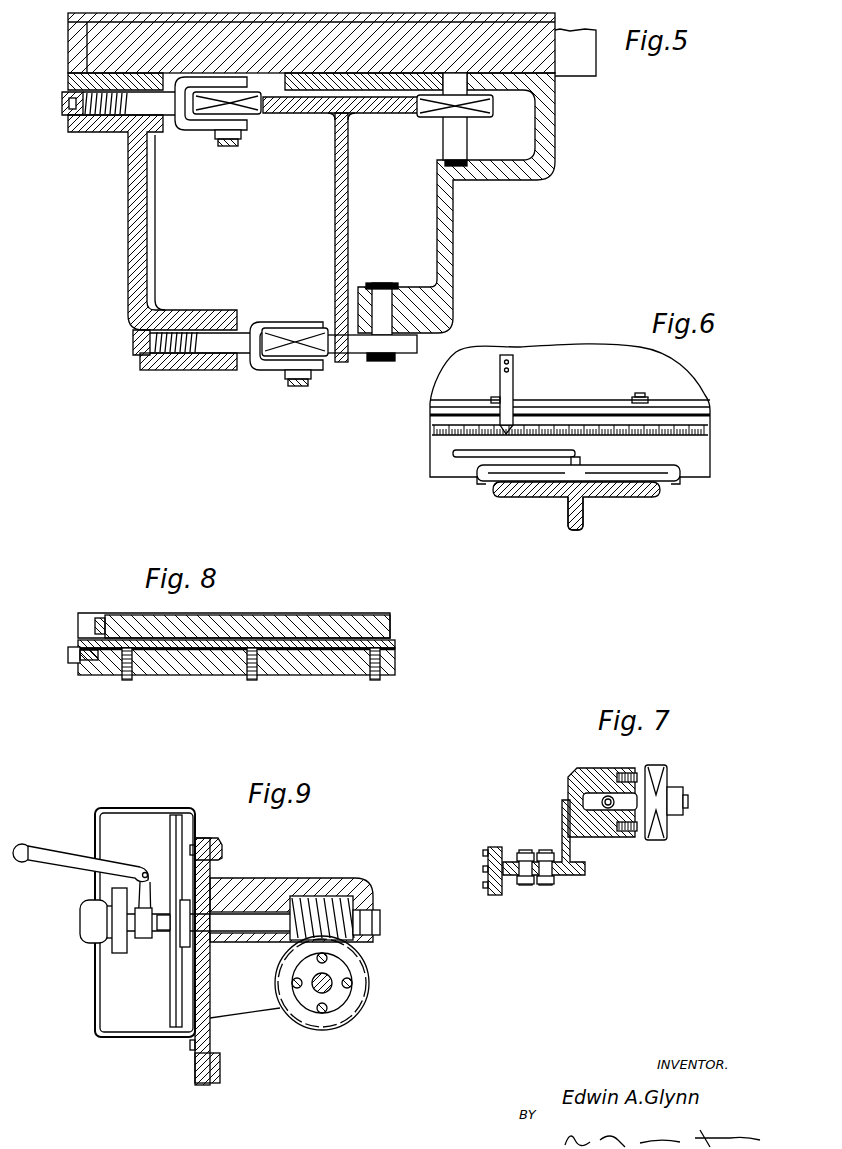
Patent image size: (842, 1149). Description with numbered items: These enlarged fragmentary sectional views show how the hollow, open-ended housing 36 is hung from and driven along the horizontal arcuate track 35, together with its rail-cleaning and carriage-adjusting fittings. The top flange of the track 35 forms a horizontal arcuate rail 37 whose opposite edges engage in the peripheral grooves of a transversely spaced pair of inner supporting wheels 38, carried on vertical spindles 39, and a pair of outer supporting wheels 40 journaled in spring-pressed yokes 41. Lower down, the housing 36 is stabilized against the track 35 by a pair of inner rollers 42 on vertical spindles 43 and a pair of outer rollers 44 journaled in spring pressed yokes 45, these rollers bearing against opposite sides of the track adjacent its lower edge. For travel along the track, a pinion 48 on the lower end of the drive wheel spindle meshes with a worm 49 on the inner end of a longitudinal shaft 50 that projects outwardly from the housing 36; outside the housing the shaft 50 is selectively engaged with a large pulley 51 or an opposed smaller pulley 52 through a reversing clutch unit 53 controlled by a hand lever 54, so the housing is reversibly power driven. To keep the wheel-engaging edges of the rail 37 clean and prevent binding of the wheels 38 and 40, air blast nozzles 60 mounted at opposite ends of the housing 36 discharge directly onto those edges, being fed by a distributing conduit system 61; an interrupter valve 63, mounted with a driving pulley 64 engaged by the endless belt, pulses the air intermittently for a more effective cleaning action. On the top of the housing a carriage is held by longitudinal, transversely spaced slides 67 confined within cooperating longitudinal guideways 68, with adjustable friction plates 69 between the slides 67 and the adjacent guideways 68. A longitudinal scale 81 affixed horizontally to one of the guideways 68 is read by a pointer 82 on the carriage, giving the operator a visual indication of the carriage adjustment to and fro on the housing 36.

In FIG. 5, the track 35 is at (328, 172).
In FIG. 6, the track 35 is at (583, 520).
In FIG. 5, the housing 36 is at (137, 237).
In FIG. 9, the housing 36 is at (205, 980).
In FIG. 5, the horizontal arcuate rail 37 is at (380, 113).
In FIG. 6, the horizontal arcuate rail 37 is at (525, 490).
In FIG. 5, the inner supporting wheels 38 is at (470, 107).
In FIG. 5, the vertical spindles 39 is at (460, 145).
In FIG. 5, the outer supporting wheels 40 is at (218, 110).
In FIG. 5, the spring-pressed yokes 41 is at (186, 128).
In FIG. 5, the inner rollers 42 is at (385, 347).
In FIG. 5, the vertical spindles 43 is at (382, 300).
In FIG. 5, the outer rollers 44 is at (282, 338).
In FIG. 5, the spring pressed yokes 45 is at (258, 362).
In FIG. 9, the pinion 48 is at (370, 985).
In FIG. 9, the worm 49 is at (340, 905).
In FIG. 9, the longitudinal shaft 50 is at (255, 918).
In FIG. 9, the large pulley 51 is at (172, 822).
In FIG. 9, the smaller pulley 52 is at (115, 893).
In FIG. 9, the reversing clutch unit 53 is at (144, 945).
In FIG. 9, the hand lever 54 is at (50, 858).
In FIG. 6, the air blast nozzles 60 is at (478, 470).
In FIG. 6, the distributing conduit system 61 is at (455, 452).
In FIG. 7, the interrupter valve 63 is at (605, 835).
In FIG. 7, the driving pulley 64 is at (658, 790).
In FIG. 8, the slides 67 is at (322, 623).
In FIG. 5, the guideways 68 is at (578, 64).
In FIG. 6, the guideways 68 is at (695, 411).
In FIG. 8, the guideways 68 is at (345, 675).
In FIG. 8, the adjustable friction plates 69 is at (348, 640).
In FIG. 6, the longitudinal scale 81 is at (545, 430).
In FIG. 6, the pointer 82 is at (512, 392).